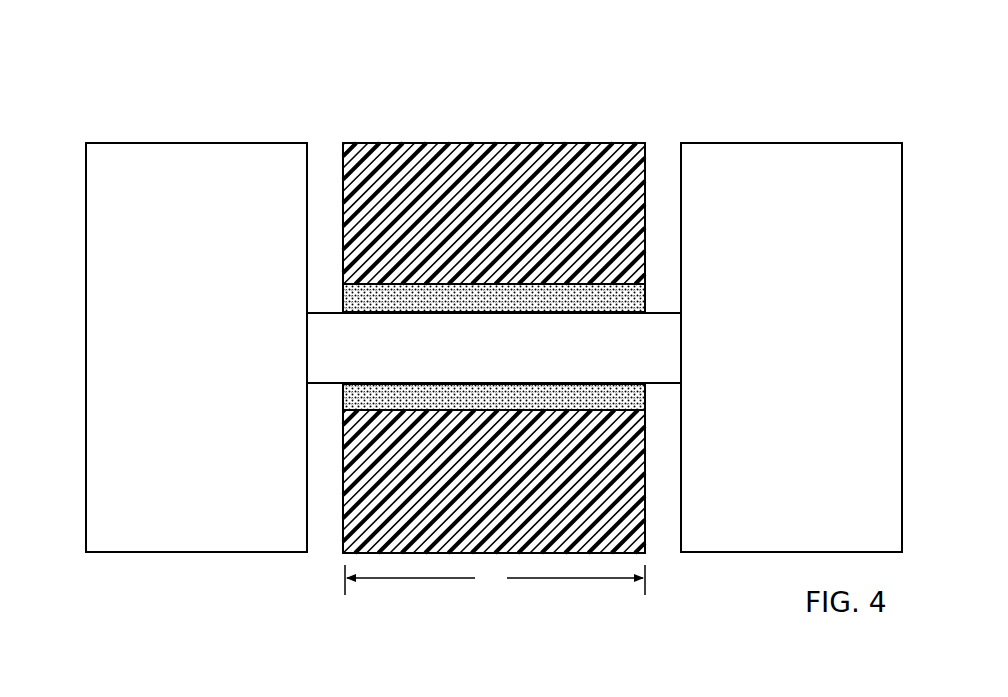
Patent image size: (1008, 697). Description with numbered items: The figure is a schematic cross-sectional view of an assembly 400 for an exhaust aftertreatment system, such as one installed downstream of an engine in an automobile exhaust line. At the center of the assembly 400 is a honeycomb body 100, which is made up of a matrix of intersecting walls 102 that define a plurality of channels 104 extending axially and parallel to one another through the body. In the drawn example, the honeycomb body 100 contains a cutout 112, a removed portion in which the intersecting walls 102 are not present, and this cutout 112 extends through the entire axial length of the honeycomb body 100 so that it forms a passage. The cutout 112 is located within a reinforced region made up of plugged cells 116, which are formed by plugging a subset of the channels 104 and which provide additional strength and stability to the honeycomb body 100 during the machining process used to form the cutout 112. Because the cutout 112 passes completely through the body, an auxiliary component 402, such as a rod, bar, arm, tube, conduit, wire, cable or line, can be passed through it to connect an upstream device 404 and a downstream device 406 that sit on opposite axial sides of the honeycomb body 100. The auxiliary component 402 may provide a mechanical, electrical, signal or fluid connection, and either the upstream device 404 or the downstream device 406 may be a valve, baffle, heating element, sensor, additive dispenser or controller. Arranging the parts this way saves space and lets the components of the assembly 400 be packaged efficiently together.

The assembly 400 is at (78, 74).
The honeycomb body 100 is at (333, 120).
The intersecting walls 102 is at (447, 183).
The channels 104 is at (494, 348).
The plugged cells 116 is at (567, 297).
The cutout 112 is at (343, 385).
The auxiliary component 402 is at (665, 327).
The upstream device 404 is at (193, 533).
The downstream device 406 is at (745, 517).